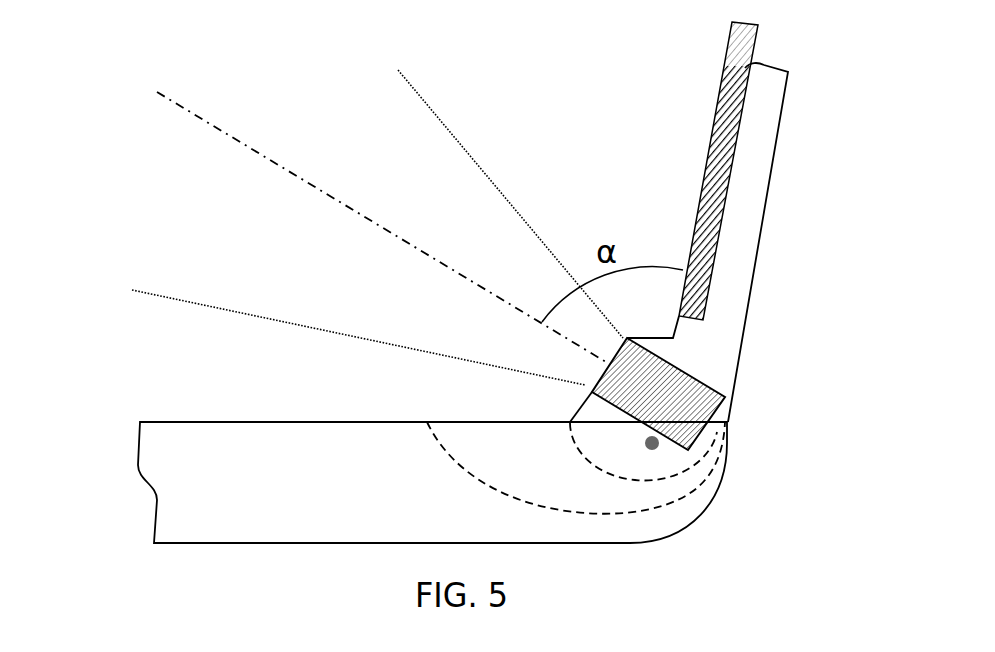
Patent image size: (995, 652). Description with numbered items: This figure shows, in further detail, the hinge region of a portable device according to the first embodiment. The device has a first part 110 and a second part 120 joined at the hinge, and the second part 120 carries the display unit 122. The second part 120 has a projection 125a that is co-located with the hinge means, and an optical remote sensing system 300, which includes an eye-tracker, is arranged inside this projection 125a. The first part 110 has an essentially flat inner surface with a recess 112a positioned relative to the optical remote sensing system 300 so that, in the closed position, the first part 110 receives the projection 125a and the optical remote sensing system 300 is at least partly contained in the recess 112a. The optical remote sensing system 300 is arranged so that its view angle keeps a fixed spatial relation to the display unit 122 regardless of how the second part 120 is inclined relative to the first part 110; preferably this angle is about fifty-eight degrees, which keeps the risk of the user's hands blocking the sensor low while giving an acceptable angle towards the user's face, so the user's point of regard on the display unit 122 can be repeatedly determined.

The first part 110 is at (138, 453).
The recess 112a is at (625, 513).
The second part 120 is at (762, 218).
The display unit 122 is at (713, 118).
The projection 125a is at (590, 410).
The optical remote sensing system 300 is at (678, 367).